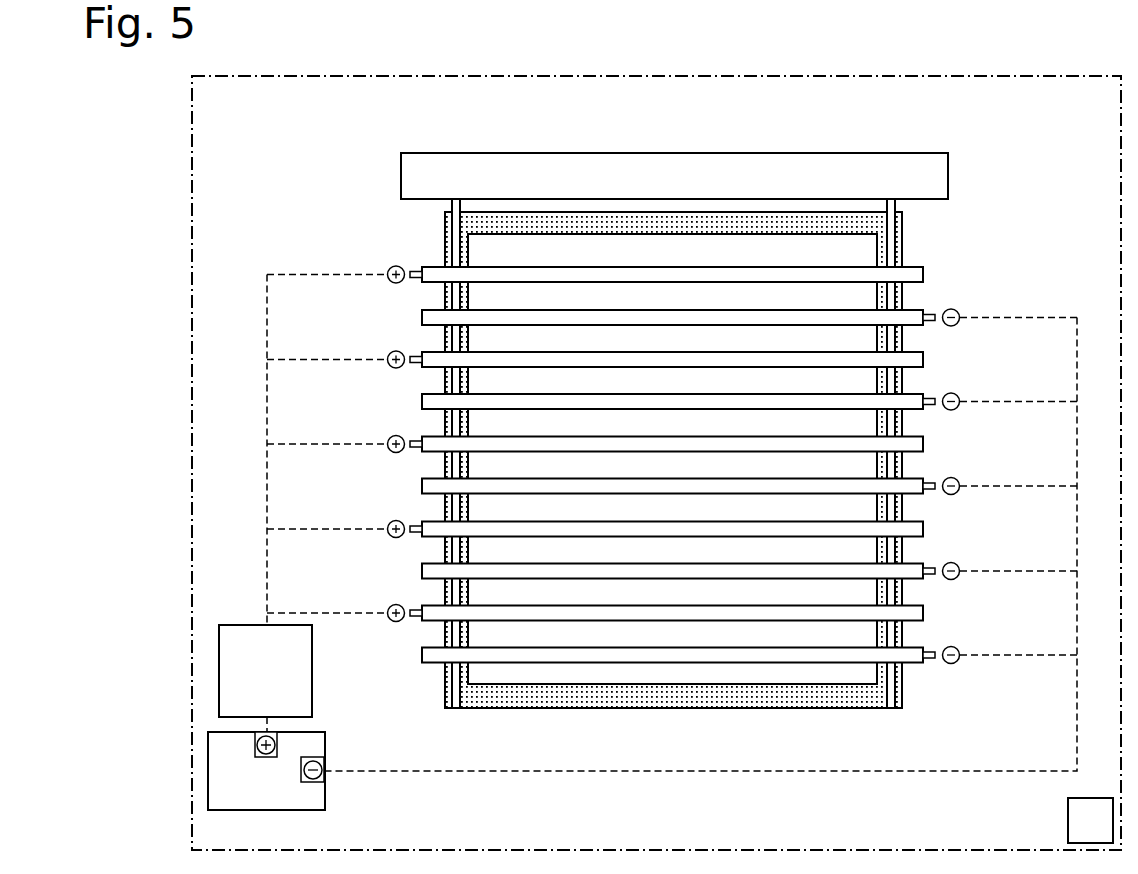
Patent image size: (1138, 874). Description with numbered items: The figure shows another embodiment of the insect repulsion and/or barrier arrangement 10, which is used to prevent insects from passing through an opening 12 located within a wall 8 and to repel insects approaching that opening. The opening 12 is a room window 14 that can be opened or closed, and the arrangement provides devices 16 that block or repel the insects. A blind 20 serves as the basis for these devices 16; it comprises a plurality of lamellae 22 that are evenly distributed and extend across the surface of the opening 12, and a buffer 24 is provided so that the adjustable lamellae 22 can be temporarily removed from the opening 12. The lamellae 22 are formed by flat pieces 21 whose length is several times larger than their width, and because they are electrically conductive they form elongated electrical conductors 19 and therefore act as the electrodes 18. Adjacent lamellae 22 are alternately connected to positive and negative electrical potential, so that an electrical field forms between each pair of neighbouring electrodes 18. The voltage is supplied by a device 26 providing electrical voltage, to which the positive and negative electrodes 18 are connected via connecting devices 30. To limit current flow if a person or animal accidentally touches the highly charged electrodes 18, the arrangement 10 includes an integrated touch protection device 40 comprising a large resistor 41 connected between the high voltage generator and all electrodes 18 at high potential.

The wall 8 is at (1090, 820).
The insect repulsion and/or barrier arrangement 10 is at (318, 163).
The opening 12 is at (927, 233).
The room window 14 is at (673, 425).
The devices 16 is at (543, 653).
The electrodes 18 is at (704, 475).
The elongated electrical conductors 19 is at (737, 263).
The blind 20 is at (458, 233).
The flat pieces 21 is at (737, 263).
The lamellae 22 is at (921, 277).
The buffer 24 is at (887, 160).
The device providing electrical voltage 26 is at (325, 795).
The connecting devices 30 is at (313, 274).
The touch protection device 40 is at (265, 671).
The large resistor 41 is at (265, 671).